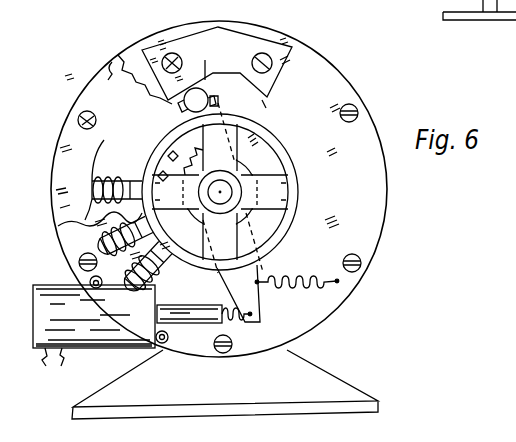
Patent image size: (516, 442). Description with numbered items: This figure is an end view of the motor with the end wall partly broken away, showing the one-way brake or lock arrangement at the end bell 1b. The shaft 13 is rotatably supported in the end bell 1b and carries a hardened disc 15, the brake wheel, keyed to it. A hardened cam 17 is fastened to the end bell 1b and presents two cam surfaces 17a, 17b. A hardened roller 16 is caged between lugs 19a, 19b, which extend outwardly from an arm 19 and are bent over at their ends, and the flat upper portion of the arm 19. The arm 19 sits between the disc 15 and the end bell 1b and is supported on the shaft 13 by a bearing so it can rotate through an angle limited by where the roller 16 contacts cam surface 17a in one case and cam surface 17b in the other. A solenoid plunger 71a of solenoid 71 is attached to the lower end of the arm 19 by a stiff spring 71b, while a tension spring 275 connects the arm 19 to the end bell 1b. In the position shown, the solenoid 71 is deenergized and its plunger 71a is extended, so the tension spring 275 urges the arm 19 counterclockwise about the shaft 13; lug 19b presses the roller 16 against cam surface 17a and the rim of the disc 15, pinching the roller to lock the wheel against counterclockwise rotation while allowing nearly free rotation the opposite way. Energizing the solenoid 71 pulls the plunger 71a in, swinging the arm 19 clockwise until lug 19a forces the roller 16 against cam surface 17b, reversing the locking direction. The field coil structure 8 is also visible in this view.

The end bell 1b is at (377, 222).
The field coils 8 is at (118, 212).
The shaft 13 is at (217, 196).
The hardened disc 15 is at (292, 158).
The hardened roller 16 is at (195, 92).
The hardened cam 17 is at (240, 40).
The cam surface 17a is at (202, 62).
The cam surface 17b is at (262, 100).
The arm 19 is at (190, 147).
The lug 19a is at (140, 78).
The lug 19b is at (218, 100).
The solenoid 71 is at (114, 292).
The solenoid plunger 71a is at (178, 310).
The stiff spring 71b is at (232, 318).
The tension spring 275 is at (284, 280).